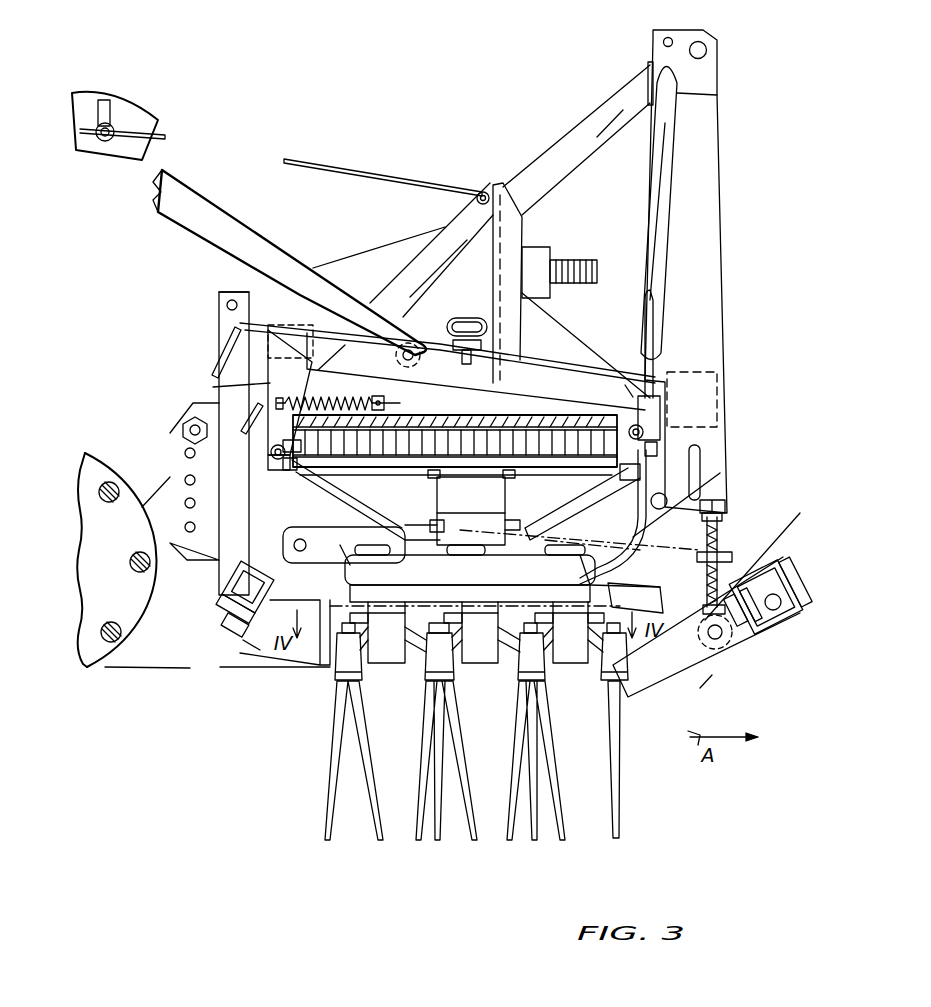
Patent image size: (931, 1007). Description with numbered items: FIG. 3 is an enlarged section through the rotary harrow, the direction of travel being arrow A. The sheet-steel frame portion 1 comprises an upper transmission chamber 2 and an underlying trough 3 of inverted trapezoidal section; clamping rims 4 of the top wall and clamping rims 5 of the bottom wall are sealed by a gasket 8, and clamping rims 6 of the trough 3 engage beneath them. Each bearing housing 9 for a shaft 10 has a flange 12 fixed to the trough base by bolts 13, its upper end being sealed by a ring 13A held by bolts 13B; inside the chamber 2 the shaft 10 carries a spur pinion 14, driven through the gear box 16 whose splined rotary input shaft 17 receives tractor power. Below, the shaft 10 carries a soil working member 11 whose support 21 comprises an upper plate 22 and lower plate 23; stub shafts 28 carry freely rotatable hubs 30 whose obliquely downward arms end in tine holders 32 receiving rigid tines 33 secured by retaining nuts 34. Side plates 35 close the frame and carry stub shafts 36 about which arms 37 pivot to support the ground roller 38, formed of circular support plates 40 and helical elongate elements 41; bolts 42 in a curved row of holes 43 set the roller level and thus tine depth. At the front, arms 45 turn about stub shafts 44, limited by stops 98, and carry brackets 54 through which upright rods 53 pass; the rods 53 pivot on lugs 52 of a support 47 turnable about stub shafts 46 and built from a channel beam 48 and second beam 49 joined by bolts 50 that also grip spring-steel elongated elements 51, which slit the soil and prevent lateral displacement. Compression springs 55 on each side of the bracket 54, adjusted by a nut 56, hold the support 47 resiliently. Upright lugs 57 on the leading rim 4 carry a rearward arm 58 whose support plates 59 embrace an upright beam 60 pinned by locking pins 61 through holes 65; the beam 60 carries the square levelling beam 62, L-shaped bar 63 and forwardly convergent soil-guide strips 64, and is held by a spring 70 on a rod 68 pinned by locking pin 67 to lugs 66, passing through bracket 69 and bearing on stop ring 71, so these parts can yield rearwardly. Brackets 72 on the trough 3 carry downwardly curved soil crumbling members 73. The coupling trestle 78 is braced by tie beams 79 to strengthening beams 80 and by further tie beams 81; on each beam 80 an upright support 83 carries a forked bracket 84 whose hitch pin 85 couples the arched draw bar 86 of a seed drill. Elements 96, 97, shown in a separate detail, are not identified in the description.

The hollow frame portion 1 is at (296, 522).
The upper transmission chamber 2 is at (455, 434).
The trough 3 is at (560, 505).
The clamping rims 4 is at (662, 425).
The clamping rims 5 is at (660, 445).
The clamping rims 6 is at (667, 497).
The gasket 8 is at (632, 396).
The bearing housing 9 is at (515, 505).
The shaft 10 is at (471, 511).
The soil working or cultivating member 11 is at (500, 742).
The flange 12 is at (430, 523).
The bolts 13 is at (488, 556).
The ring 13A is at (471, 482).
The bolts 13B is at (468, 502).
The pinion 14 is at (548, 428).
The gear box 16 is at (378, 255).
The rotary input shaft 17 is at (570, 256).
The support 21 is at (356, 546).
The upper plate 22 is at (352, 584).
The lower plate 23 is at (422, 590).
The stub shaft 28 is at (560, 570).
The hub 30 is at (365, 686).
The tine holder 32 is at (465, 682).
The soil working tine 33 is at (330, 745).
The retaining nut 34 is at (630, 655).
The side plates 35 is at (222, 580).
The stub shafts 36 is at (655, 515).
The arms 37 is at (170, 440).
The ground roller 38 is at (96, 442).
The support plates 40 is at (105, 660).
The elongate elements 41 is at (138, 550).
The bolts 42 is at (183, 425).
The holes 43 is at (185, 454).
The stub shafts 44 is at (307, 545).
The arms 45 is at (305, 564).
The stub shafts 46 is at (795, 592).
The support 47 is at (785, 570).
The beam 48 is at (792, 620).
The second beam 49 is at (777, 640).
The bolts 50 is at (788, 540).
The elongated elements 51 is at (692, 688).
The lugs 52 is at (724, 648).
The rods 53 is at (726, 505).
The brackets 54 is at (703, 598).
The helical compression springs 55 is at (719, 545).
The nut 56 is at (723, 518).
The upright lugs 57 is at (658, 360).
The arm 58 is at (582, 360).
The support plates 59 is at (280, 325).
The upright beam 60 is at (219, 298).
The locking pins 61 is at (226, 352).
The levelling beam 62 is at (230, 582).
The bar 63 is at (235, 640).
The resilient strips 64 is at (295, 660).
The holes 65 is at (233, 298).
The lugs 66 is at (212, 387).
The locking pin 67 is at (185, 482).
The rod 68 is at (400, 403).
The bracket 69 is at (285, 414).
The helical compression spring 70 is at (320, 372).
The stop ring 71 is at (396, 356).
The brackets 72 is at (620, 472).
The soil crumbling member 73 is at (585, 540).
The coupling member or trestle 78 is at (722, 272).
The tie beams 79 is at (668, 245).
The strengthening beams 80 is at (530, 372).
The further tie beams 81 is at (592, 124).
The upright support 83 is at (498, 185).
The forked bracket 84 is at (450, 342).
The hitch pin 85 is at (466, 316).
The arched draw bar 86 is at (128, 102).
The rod 96 is at (333, 170).
The pin 97 is at (103, 142).
The stops 98 is at (625, 598).